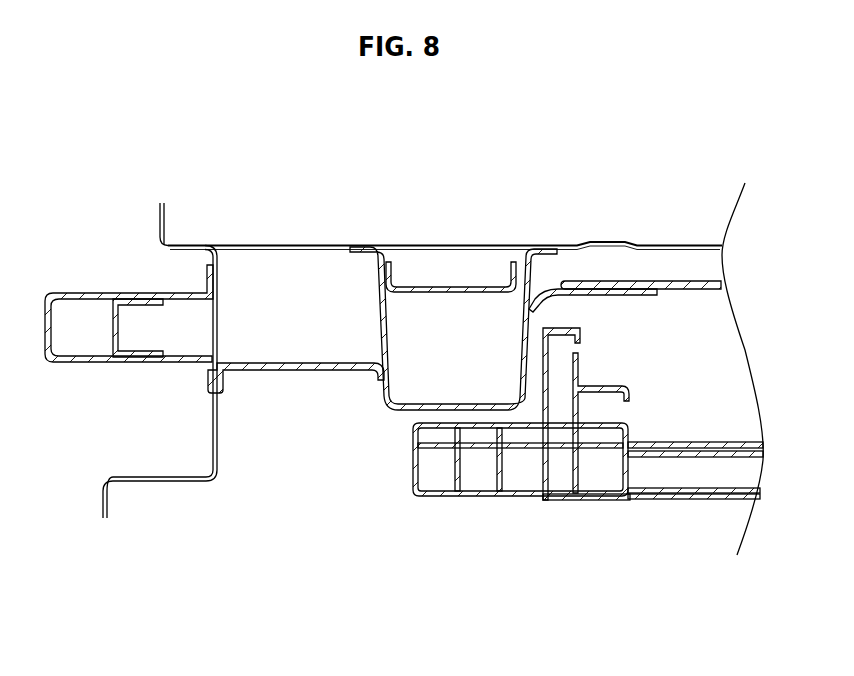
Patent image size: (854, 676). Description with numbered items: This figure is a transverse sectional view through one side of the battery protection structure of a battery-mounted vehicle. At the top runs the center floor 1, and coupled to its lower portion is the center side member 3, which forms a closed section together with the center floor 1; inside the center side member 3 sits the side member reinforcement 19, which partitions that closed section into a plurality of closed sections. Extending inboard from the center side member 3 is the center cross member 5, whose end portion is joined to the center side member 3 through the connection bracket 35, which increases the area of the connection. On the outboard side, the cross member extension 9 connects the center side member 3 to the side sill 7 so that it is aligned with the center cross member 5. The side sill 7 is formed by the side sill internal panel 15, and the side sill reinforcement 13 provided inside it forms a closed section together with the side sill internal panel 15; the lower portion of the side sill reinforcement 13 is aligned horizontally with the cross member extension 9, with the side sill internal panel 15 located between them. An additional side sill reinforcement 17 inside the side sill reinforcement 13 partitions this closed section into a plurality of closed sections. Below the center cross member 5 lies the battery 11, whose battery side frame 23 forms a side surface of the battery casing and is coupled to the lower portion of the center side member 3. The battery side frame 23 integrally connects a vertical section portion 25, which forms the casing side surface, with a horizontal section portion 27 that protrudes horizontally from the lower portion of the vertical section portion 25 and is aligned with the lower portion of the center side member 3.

The center floor 1 is at (441, 202).
The center side member 3 is at (453, 378).
The center cross member 5 is at (641, 221).
The side sill 7 is at (160, 409).
The side sill internal panel 15 is at (160, 409).
The cross member extension 9 is at (296, 416).
The battery 11 is at (695, 529).
The side sill reinforcement 13 is at (129, 288).
The additional side sill reinforcement 17 is at (138, 373).
The side member reinforcement 19 is at (451, 223).
The battery side frame 23 is at (521, 482).
The vertical section portion 25 is at (586, 460).
The horizontal section portion 27 is at (521, 507).
The connection bracket 35 is at (593, 233).